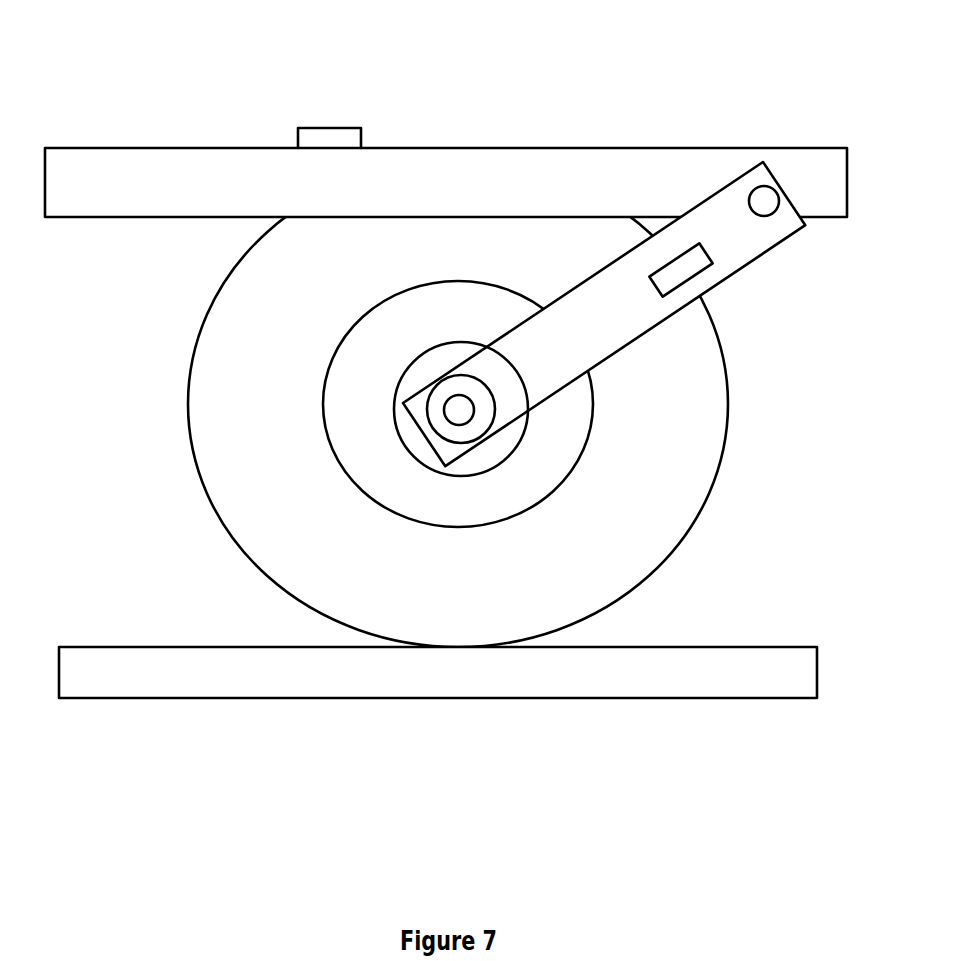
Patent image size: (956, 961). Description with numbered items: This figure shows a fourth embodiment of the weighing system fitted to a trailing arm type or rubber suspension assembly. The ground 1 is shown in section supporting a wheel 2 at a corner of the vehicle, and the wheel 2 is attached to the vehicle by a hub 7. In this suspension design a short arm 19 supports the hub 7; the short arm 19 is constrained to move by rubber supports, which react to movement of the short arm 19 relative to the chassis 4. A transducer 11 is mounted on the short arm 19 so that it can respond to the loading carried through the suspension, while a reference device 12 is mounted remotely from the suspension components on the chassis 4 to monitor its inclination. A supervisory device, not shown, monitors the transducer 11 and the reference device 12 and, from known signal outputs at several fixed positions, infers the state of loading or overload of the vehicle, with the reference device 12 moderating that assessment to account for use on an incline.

The ground 1 is at (696, 693).
The wheel 2 is at (211, 536).
The chassis 4 is at (146, 202).
The hub 7 is at (530, 452).
The transducer 11 is at (706, 289).
The reference device 12 is at (345, 112).
The short arm 19 is at (608, 267).